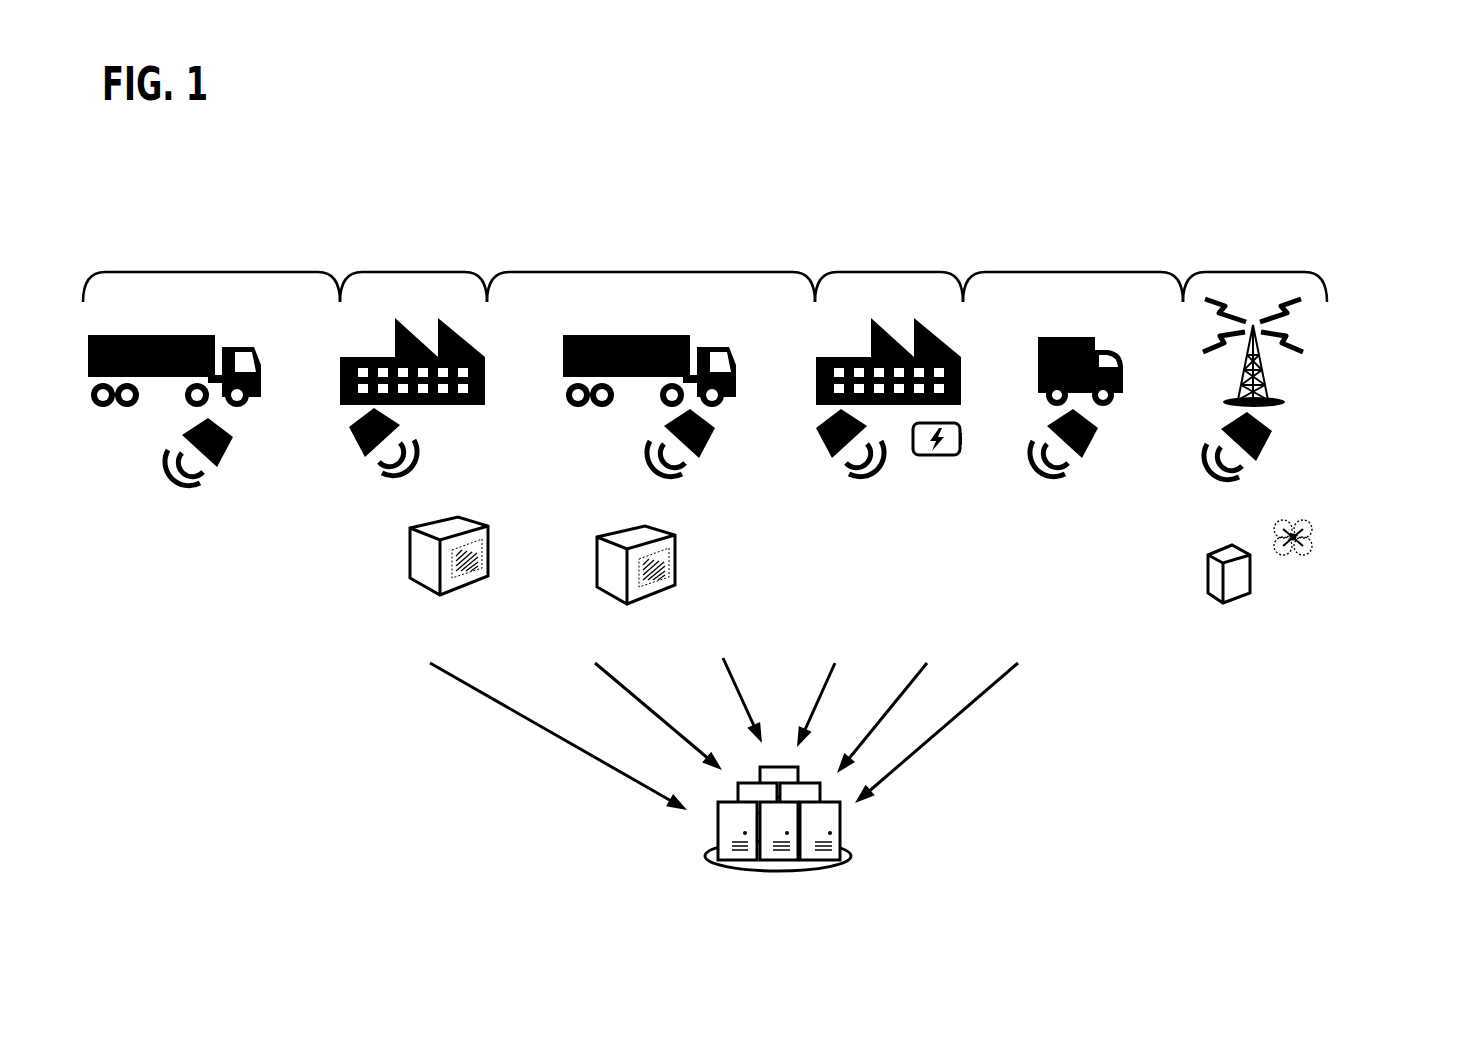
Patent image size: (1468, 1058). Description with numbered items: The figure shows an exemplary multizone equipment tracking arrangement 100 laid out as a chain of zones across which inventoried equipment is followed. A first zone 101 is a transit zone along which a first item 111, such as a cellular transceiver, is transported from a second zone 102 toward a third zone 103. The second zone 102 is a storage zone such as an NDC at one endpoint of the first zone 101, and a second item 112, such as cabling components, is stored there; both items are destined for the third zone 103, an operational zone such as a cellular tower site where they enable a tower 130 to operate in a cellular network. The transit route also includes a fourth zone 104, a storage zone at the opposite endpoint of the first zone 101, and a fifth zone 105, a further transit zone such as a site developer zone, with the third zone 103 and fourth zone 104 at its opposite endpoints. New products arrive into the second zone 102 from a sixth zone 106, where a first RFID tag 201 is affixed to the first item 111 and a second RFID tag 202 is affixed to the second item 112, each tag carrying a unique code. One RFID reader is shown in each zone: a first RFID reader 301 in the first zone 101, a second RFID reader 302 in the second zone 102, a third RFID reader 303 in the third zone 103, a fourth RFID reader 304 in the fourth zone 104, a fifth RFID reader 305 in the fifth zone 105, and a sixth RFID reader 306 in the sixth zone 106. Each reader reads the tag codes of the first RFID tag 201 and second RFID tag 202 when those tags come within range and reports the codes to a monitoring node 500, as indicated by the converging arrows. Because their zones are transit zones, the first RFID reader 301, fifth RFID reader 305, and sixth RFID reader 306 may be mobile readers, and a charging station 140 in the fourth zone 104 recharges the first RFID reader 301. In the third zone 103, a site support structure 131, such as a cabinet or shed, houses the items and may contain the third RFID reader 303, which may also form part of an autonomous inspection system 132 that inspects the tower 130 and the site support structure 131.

The multizone equipment tracking arrangement 100 is at (1362, 86).
The first zone 101 is at (652, 272).
The second zone 102 is at (413, 272).
The third zone 103 is at (1253, 272).
The fourth zone 104 is at (888, 272).
The fifth zone 105 is at (1072, 272).
The sixth zone 106 is at (211, 272).
The first item 111 is at (612, 596).
The second item 112 is at (425, 587).
The tower 130 is at (1272, 400).
The site support structure 131 is at (1225, 608).
The autonomous inspection system 132 is at (1293, 548).
The charging station 140 is at (923, 455).
The first RFID tag 201 is at (674, 550).
The second RFID tag 202 is at (487, 541).
The first RFID reader 301 is at (698, 457).
The second RFID reader 302 is at (365, 457).
The third RFID reader 303 is at (1255, 460).
The fourth RFID reader 304 is at (832, 458).
The fifth RFID reader 305 is at (1081, 457).
The sixth RFID reader 306 is at (216, 466).
The monitoring node 500 is at (780, 872).